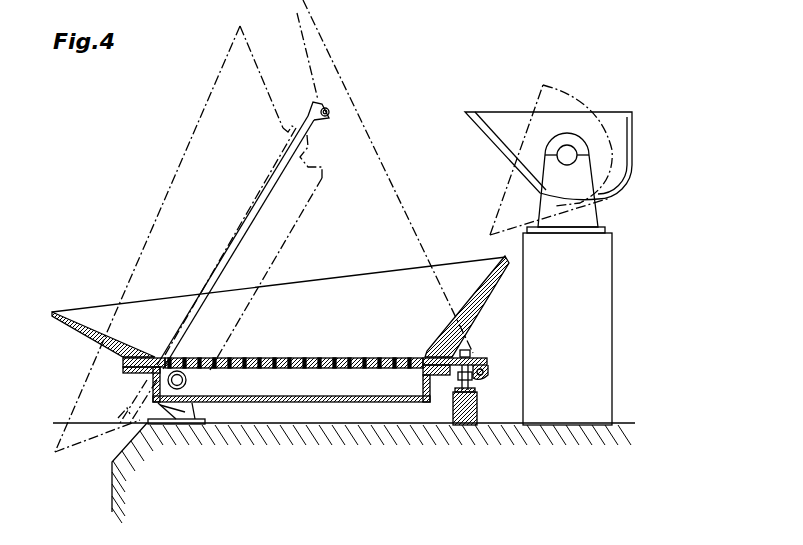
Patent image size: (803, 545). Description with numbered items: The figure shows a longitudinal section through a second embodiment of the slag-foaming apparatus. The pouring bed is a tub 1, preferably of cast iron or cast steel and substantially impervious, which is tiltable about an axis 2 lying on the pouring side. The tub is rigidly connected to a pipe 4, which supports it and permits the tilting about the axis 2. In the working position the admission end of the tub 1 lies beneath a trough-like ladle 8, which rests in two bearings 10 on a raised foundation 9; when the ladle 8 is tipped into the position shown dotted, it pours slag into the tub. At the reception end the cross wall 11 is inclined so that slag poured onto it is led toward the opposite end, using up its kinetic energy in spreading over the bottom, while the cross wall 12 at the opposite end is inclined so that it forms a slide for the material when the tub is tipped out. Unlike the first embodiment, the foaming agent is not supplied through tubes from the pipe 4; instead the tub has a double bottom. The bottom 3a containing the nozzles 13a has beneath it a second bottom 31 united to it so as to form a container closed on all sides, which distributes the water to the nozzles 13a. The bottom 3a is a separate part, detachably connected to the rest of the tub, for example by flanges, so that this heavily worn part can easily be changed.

The tub 1 is at (334, 278).
The axis 2 is at (182, 380).
The bottom 3a is at (287, 368).
The pipe 4 is at (188, 386).
The trough-like ladle 8 is at (513, 120).
The raised foundation 9 is at (607, 310).
The bearings 10 is at (592, 213).
The cross wall 11 is at (473, 307).
The cross wall 12 is at (82, 329).
The nozzles 13a is at (331, 357).
The second bottom 31 is at (367, 390).